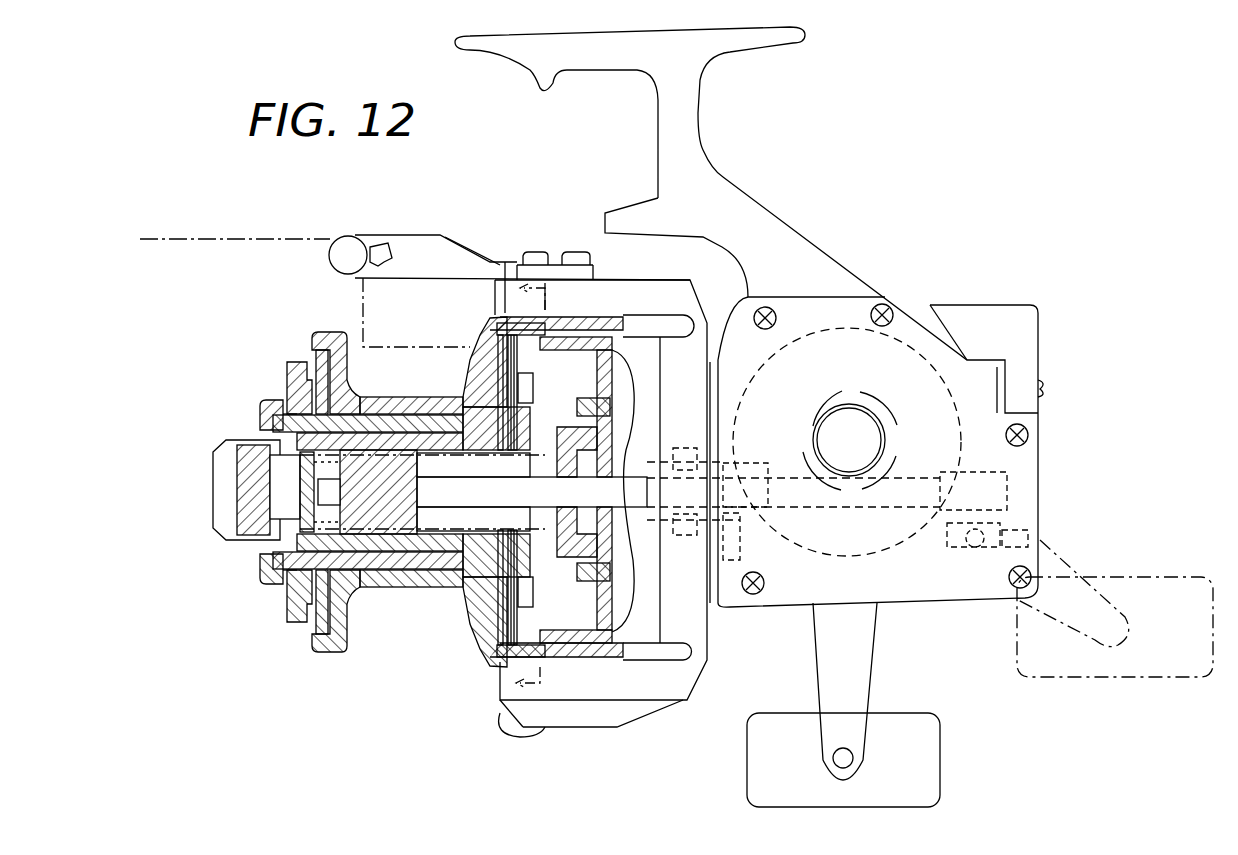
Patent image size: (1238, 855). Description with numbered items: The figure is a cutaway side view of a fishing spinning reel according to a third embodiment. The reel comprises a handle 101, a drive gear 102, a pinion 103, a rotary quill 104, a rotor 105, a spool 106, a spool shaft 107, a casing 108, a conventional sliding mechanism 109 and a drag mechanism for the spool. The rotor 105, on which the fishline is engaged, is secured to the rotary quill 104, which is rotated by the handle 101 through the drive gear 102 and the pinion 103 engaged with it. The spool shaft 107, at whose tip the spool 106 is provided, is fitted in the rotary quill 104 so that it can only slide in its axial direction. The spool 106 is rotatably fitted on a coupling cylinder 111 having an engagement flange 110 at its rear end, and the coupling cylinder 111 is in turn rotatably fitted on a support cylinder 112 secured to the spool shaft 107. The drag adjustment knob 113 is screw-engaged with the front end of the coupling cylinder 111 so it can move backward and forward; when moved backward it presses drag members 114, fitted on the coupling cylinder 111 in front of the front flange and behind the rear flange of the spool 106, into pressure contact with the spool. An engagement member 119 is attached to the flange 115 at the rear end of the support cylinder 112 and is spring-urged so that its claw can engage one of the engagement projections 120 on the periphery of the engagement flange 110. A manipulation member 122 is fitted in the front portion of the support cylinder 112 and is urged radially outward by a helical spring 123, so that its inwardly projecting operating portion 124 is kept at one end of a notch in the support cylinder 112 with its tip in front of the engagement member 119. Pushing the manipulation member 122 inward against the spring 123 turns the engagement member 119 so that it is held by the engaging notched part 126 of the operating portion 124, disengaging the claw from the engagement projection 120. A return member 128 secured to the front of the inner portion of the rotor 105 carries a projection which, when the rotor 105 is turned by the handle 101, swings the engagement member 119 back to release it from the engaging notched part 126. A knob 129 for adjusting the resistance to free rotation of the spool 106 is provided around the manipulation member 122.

The handle 101 is at (870, 627).
The drive gear 102 is at (900, 352).
The pinion 103 is at (737, 560).
The rotary quill 104 is at (618, 508).
The rotor 105 is at (628, 642).
The spool 106 is at (326, 340).
The spool shaft 107 is at (373, 555).
The casing 108 is at (822, 298).
The sliding mechanism 109 is at (993, 507).
The engagement flange 110 is at (503, 637).
The coupling cylinder 111 is at (378, 440).
The support cylinder 112 is at (366, 592).
The drag adjustment knob 113 is at (297, 380).
The drag members 114 is at (313, 365).
The flange 115 is at (520, 657).
The engagement member 119 is at (530, 367).
The engagement projections 120 is at (502, 322).
The manipulation member 122 is at (240, 472).
The helical spring 123 is at (310, 506).
The operating portion 124 is at (402, 440).
The engaging notched part 126 is at (500, 413).
The return member 128 is at (472, 512).
The knob 129 is at (260, 410).